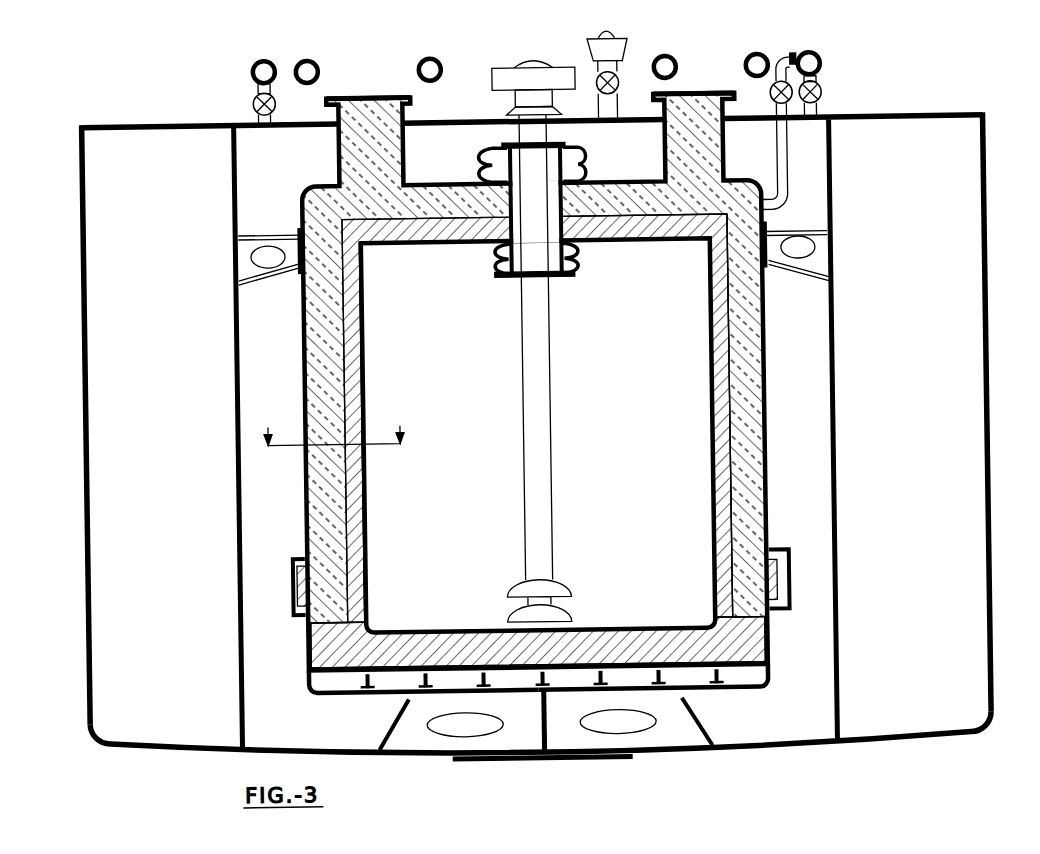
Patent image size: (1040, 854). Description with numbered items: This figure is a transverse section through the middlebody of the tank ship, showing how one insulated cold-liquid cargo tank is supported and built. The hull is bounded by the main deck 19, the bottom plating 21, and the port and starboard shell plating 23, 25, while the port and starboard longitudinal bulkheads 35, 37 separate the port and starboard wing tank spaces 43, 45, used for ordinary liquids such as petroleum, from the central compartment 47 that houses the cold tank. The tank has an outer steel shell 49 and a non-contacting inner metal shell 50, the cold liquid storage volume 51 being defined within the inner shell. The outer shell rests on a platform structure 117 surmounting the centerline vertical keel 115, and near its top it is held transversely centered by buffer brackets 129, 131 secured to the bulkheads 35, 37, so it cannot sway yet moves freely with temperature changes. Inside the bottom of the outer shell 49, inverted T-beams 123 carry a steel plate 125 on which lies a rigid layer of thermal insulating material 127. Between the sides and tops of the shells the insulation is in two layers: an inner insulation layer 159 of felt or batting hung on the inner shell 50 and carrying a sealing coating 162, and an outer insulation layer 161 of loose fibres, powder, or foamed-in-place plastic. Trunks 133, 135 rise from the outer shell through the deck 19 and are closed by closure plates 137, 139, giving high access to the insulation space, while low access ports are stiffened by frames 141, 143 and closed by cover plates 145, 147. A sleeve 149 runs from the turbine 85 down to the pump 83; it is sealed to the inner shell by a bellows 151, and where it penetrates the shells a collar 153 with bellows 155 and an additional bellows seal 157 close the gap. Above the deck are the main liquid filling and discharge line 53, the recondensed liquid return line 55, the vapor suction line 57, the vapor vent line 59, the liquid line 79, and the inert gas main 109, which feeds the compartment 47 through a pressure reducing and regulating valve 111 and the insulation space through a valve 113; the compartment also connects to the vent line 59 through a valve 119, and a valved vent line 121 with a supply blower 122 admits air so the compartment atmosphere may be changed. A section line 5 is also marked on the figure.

The section line 5- 5 is at (333, 421).
The main deck 19 is at (535, 430).
The bottom plating 21 is at (770, 752).
The port shell plating 23 is at (83, 405).
The starboard shell plating 25 is at (992, 294).
The port longitudinal bulkhead 35 is at (235, 347).
The starboard longitudinal bulkhead 37 is at (837, 325).
The port wing tank space 43 is at (142, 431).
The starboard wing tank space 45 is at (900, 388).
The compartment 47 is at (256, 344).
The outer steel shell 49 is at (560, 361).
The inner metal shell 50 is at (362, 505).
The cold liquid storage volume 51 is at (443, 383).
The main liquid filling and discharge line 53 is at (446, 60).
The recondensed liquid return line 55 is at (676, 58).
The vapor suction line 57 is at (322, 59).
The vapor vent line 59 is at (257, 60).
The liquid line 79 is at (751, 58).
The pump 83 is at (570, 584).
The turbine 85 is at (544, 66).
The inert gas main 109 is at (826, 60).
The pressure reducing and regulating valve 111 is at (827, 95).
The pressure reducing and regulating valve 113 is at (775, 97).
The centerline vertical keel 115 is at (544, 730).
The platform structure 117 is at (392, 706).
The valve 119 is at (257, 98).
The valved vent line 121 is at (619, 37).
The supply blower 122 is at (622, 73).
The inverted T-beams 123 is at (752, 692).
The steel plate 125 is at (306, 688).
The thermal insulating material layer 127 is at (762, 643).
The buffer bracket 129 is at (285, 231).
The buffer bracket 131 is at (797, 272).
The trunk 133 is at (336, 142).
The trunk 135 is at (740, 149).
The closure plate 137 is at (377, 94).
The closure plate 139 is at (700, 93).
The stiffener frame 141 is at (299, 560).
The stiffener frame 143 is at (778, 560).
The cover plate 145 is at (289, 562).
The cover plate 147 is at (790, 572).
The sleeve 149 is at (552, 326).
The bellows 151 is at (580, 262).
The collar 153 is at (490, 160).
The bellows 155 is at (590, 164).
The bellows seal 157 is at (570, 145).
The inner insulation layer 159 is at (352, 338).
The outer insulation layer 161 is at (762, 480).
The coating 162 is at (733, 366).